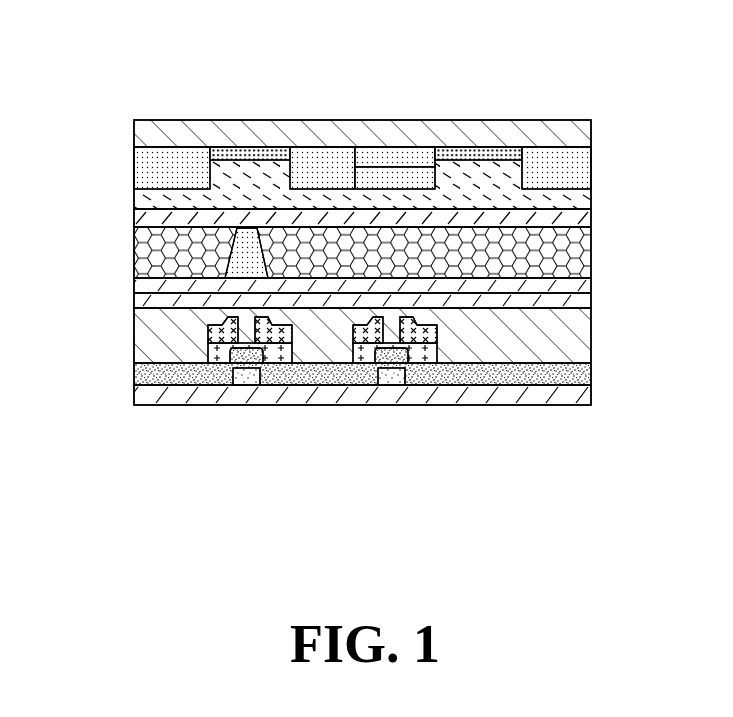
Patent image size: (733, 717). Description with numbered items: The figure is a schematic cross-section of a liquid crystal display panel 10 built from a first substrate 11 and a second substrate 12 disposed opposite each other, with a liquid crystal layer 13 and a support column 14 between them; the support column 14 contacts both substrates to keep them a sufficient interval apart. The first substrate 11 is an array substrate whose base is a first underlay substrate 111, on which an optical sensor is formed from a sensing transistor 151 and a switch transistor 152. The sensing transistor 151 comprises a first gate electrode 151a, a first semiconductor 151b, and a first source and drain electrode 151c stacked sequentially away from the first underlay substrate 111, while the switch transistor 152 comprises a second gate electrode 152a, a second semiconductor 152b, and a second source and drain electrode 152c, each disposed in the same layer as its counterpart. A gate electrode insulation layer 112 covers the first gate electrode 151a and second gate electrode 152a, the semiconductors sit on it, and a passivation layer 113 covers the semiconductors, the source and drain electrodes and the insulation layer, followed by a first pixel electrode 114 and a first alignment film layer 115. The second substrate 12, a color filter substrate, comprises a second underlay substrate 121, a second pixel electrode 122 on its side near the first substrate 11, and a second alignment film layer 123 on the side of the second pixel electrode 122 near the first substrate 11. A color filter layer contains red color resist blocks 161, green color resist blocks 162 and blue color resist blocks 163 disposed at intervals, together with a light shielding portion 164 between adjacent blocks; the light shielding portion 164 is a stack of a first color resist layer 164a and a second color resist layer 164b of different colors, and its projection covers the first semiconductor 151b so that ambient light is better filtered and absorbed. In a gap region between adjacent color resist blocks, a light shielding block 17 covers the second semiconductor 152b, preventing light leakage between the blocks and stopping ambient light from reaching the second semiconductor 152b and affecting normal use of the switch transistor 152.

The liquid crystal display panel 10 is at (364, 268).
The first substrate 11 is at (422, 339).
The second substrate 12 is at (304, 175).
The liquid crystal layer 13 is at (570, 238).
The support column 14 is at (243, 254).
The light shielding block 17 is at (242, 155).
The first underlay substrate 111 is at (391, 397).
The gate electrode insulation layer 112 is at (576, 378).
The passivation layer 113 is at (575, 345).
The first pixel electrode 114 is at (572, 303).
The first alignment film layer 115 is at (572, 288).
The second underlay substrate 121 is at (140, 130).
The second pixel electrode 122 is at (140, 204).
The second alignment film layer 123 is at (328, 220).
The sensing transistor 151 is at (433, 419).
The first gate electrode 151a is at (391, 366).
The first semiconductor 151b is at (448, 344).
The first source and drain electrode 151c is at (440, 331).
The switch transistor 152 is at (249, 412).
The second gate electrode 152a is at (252, 368).
The second semiconductor 152b is at (293, 341).
The second source and drain electrode 152c is at (215, 408).
The red color resist blocks 161 is at (312, 173).
The green color resist blocks 162 is at (170, 173).
The blue color resist blocks 163 is at (572, 169).
The light shielding portion 164 is at (401, 102).
The first color resist layer 164a is at (378, 163).
The second color resist layer 164b is at (418, 182).